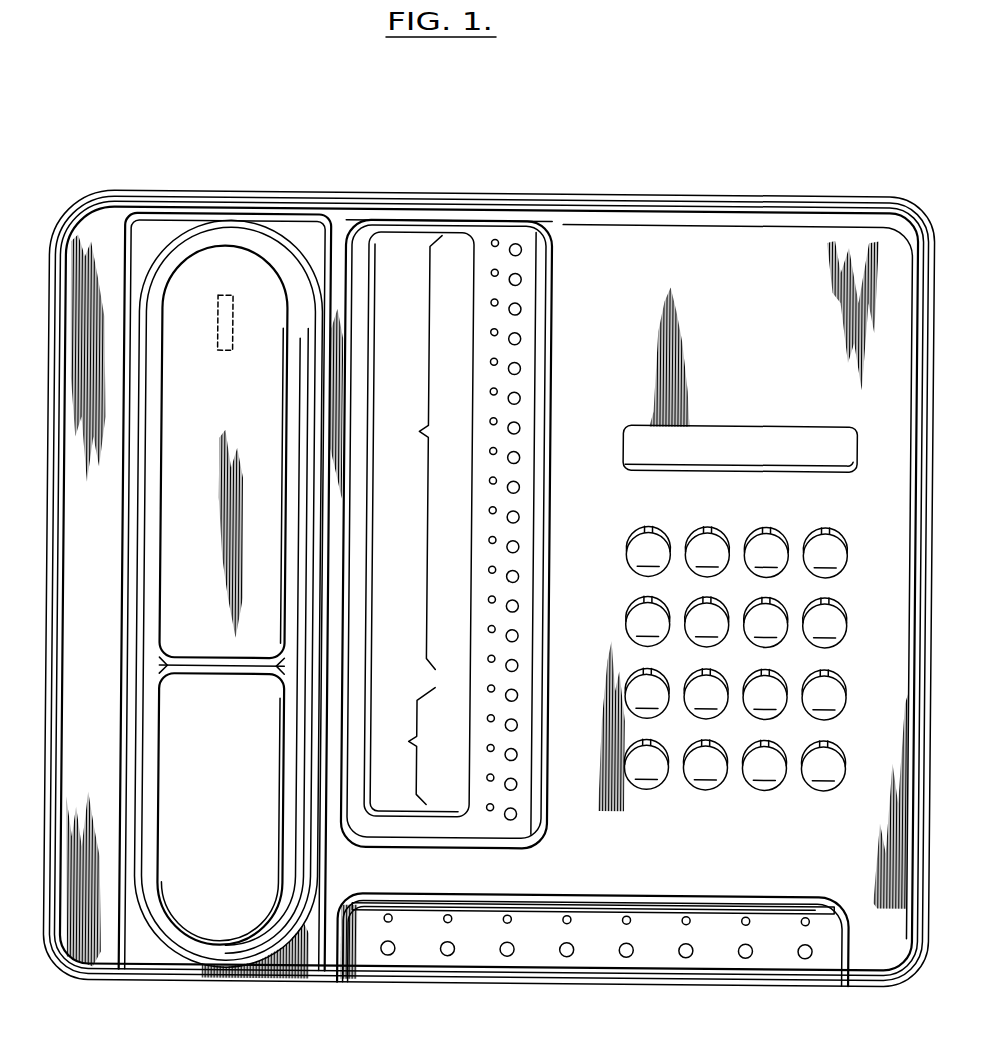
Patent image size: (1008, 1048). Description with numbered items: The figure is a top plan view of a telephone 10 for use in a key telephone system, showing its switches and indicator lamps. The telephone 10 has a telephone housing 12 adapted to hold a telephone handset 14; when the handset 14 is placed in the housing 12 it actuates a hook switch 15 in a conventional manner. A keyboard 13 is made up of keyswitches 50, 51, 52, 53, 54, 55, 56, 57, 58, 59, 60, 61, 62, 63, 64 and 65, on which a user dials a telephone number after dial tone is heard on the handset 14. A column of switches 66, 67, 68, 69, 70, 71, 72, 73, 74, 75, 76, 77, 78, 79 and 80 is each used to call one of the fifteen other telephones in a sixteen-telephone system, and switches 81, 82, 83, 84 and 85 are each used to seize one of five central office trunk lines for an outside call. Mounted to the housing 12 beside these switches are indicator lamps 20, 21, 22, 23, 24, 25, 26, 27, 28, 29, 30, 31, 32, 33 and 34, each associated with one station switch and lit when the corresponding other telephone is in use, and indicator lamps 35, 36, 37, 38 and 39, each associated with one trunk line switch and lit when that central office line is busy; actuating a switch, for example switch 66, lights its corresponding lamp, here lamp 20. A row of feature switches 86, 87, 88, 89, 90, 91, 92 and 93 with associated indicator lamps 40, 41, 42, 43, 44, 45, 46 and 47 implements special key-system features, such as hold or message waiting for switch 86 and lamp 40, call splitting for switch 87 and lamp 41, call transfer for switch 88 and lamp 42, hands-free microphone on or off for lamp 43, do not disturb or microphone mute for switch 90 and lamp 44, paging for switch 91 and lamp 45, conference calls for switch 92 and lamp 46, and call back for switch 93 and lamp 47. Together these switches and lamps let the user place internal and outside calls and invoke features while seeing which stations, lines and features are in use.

The telephone 10 is at (489, 571).
The telephone housing 12 is at (744, 194).
The keyboard 13 is at (766, 643).
The telephone handset 14 is at (209, 252).
The hook switch 15 is at (226, 354).
The indicator lamp 20 is at (488, 243).
The indicator lamp 21 is at (488, 273).
The indicator lamp 22 is at (488, 302).
The indicator lamp 23 is at (488, 332).
The indicator lamp 24 is at (488, 362).
The indicator lamp 25 is at (488, 392).
The indicator lamp 26 is at (488, 421).
The indicator lamp 27 is at (488, 451).
The indicator lamp 28 is at (488, 481).
The indicator lamp 29 is at (488, 510).
The indicator lamp 30 is at (488, 540).
The indicator lamp 31 is at (488, 570).
The indicator lamp 32 is at (488, 599).
The indicator lamp 33 is at (488, 629).
The indicator lamp 34 is at (488, 659).
The indicator lamp 35 is at (488, 688).
The indicator lamp 36 is at (488, 718).
The indicator lamp 37 is at (488, 748).
The indicator lamp 38 is at (488, 778).
The indicator lamp 39 is at (488, 807).
The indicator lamp 40 is at (392, 915).
The indicator lamp 41 is at (452, 915).
The indicator lamp 42 is at (511, 915).
The indicator lamp 43 is at (571, 915).
The indicator lamp 44 is at (630, 915).
The indicator lamp 45 is at (690, 915).
The indicator lamp 46 is at (750, 915).
The indicator lamp 47 is at (809, 915).
The keyswitch 50 is at (648, 551).
The keyswitch 51 is at (707, 552).
The keyswitch 52 is at (766, 552).
The keyswitch 53 is at (825, 553).
The keyswitch 54 is at (648, 621).
The keyswitch 55 is at (707, 622).
The keyswitch 56 is at (766, 622).
The keyswitch 57 is at (825, 623).
The keyswitch 58 is at (647, 693).
The keyswitch 59 is at (706, 694).
The keyswitch 60 is at (765, 694).
The keyswitch 61 is at (824, 695).
The keyswitch 62 is at (646, 764).
The keyswitch 63 is at (705, 765).
The keyswitch 64 is at (764, 765).
The keyswitch 65 is at (823, 766).
The switch 66 is at (518, 250).
The switch 67 is at (518, 279).
The switch 68 is at (518, 309).
The switch 69 is at (518, 339).
The switch 70 is at (518, 368).
The switch 71 is at (518, 398).
The switch 72 is at (518, 428).
The switch 73 is at (518, 457).
The switch 74 is at (518, 487).
The switch 75 is at (518, 517).
The switch 76 is at (518, 546).
The switch 77 is at (518, 576).
The switch 78 is at (518, 606).
The switch 79 is at (518, 636).
The switch 80 is at (518, 665).
The switch 81 is at (518, 695).
The switch 82 is at (518, 725).
The switch 83 is at (518, 754).
The switch 84 is at (518, 784).
The switch 85 is at (518, 814).
The switch 86 is at (391, 956).
The switch 87 is at (451, 956).
The switch 88 is at (510, 956).
The switch 89 is at (570, 956).
The switch 90 is at (629, 956).
The switch 91 is at (689, 956).
The switch 92 is at (749, 956).
The switch 93 is at (808, 956).